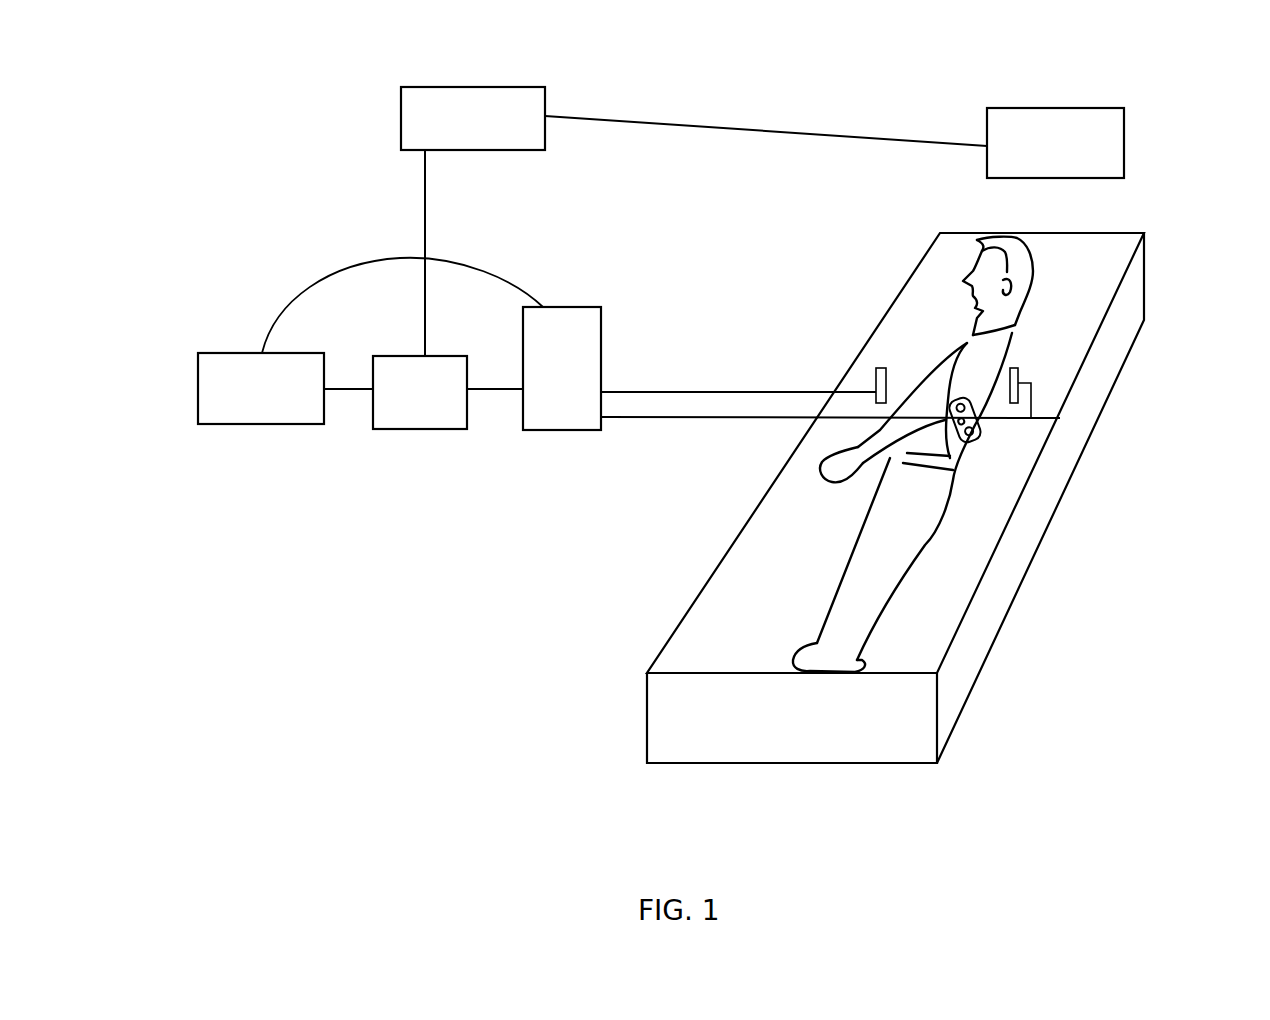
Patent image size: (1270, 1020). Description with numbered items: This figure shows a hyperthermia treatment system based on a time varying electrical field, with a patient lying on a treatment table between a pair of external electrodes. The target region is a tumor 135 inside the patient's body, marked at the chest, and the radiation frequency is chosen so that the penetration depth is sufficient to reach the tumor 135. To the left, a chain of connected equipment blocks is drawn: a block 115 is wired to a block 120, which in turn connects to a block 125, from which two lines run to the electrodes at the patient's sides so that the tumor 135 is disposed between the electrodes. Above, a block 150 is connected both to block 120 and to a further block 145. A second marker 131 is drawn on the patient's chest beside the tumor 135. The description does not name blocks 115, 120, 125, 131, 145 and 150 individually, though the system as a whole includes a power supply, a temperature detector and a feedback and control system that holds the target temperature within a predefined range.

The power supply 115 is at (222, 353).
The controller 120 is at (415, 429).
The stimulation unit 125 is at (602, 350).
The implanted device 131 is at (972, 444).
The tumor 135 is at (985, 421).
The display unit 145 is at (1077, 108).
The imaging system 150 is at (485, 87).